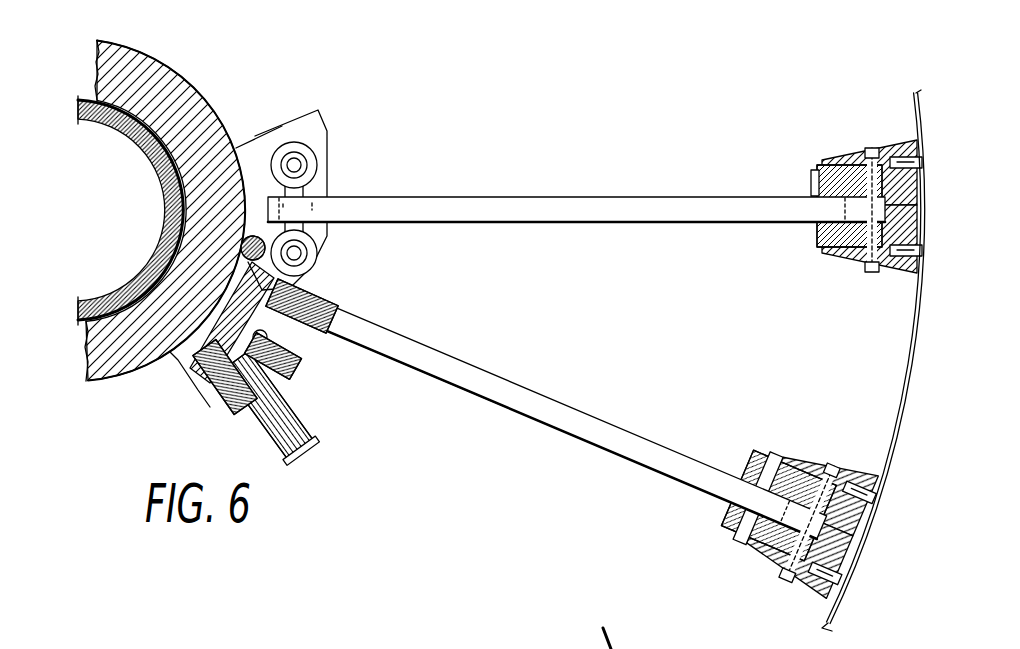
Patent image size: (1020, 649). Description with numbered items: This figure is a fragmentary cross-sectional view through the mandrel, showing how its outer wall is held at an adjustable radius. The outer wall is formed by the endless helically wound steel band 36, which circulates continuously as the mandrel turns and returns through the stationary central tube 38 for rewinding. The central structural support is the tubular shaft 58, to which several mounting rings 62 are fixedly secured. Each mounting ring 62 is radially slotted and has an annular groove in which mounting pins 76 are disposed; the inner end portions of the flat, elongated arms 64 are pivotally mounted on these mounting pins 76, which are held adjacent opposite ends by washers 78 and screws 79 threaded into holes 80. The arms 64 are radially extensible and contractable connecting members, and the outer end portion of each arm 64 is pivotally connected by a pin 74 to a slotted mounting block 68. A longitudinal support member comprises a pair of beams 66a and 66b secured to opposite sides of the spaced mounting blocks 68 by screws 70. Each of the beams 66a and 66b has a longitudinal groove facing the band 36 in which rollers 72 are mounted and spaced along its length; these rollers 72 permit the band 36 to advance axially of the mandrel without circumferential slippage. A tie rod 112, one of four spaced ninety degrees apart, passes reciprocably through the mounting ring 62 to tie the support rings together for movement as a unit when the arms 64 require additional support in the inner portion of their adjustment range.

The endless helically wound steel band 36 is at (915, 347).
The stationary central tube 38 is at (157, 162).
The tubular shaft 58 is at (158, 63).
The mounting ring 62 is at (316, 117).
The arm 64 is at (456, 198).
The beam 66a is at (895, 143).
The beam 66b is at (840, 256).
The slotted mounting block 68 is at (817, 232).
The screw 70 is at (871, 150).
The roller 72 is at (922, 157).
The pin 74 is at (813, 181).
The mounting pin 76 is at (293, 330).
The washer 78 is at (318, 150).
The screw 79 is at (303, 165).
The hole 80 is at (282, 358).
The tie rod 112 is at (251, 236).